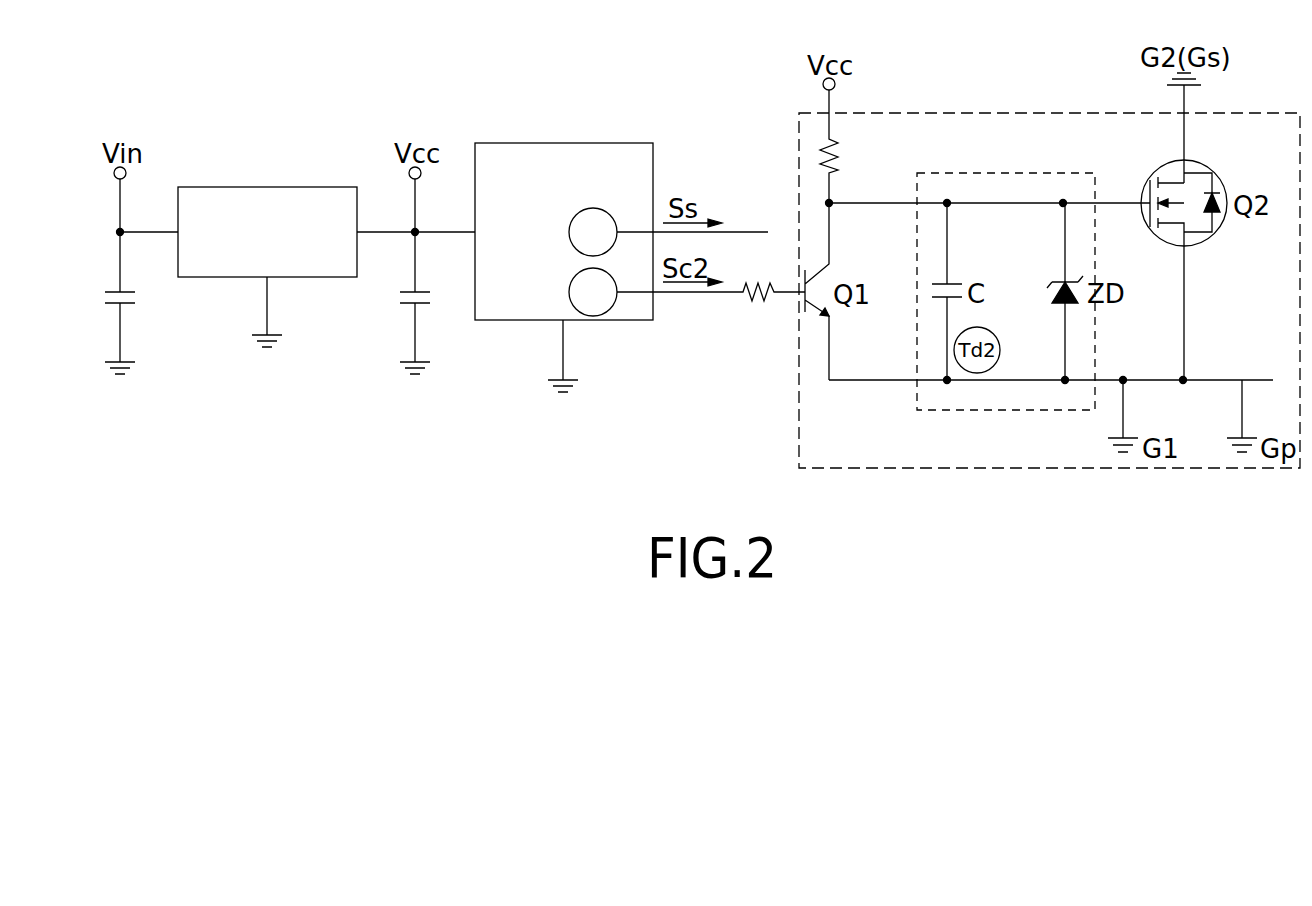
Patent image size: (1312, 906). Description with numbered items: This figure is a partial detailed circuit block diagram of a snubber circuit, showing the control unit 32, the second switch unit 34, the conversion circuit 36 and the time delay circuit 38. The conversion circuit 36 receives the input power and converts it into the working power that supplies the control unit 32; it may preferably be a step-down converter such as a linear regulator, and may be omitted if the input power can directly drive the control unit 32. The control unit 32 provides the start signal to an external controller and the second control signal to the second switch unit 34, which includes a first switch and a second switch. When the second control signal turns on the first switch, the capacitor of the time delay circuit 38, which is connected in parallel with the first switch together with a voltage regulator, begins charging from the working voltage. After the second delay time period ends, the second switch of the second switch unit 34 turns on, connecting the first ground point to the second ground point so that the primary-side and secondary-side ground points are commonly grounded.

The control unit 32 is at (563, 148).
The second switch unit 34 is at (1050, 123).
The conversion circuit 36 is at (268, 195).
The time delay circuit 38 is at (1018, 173).